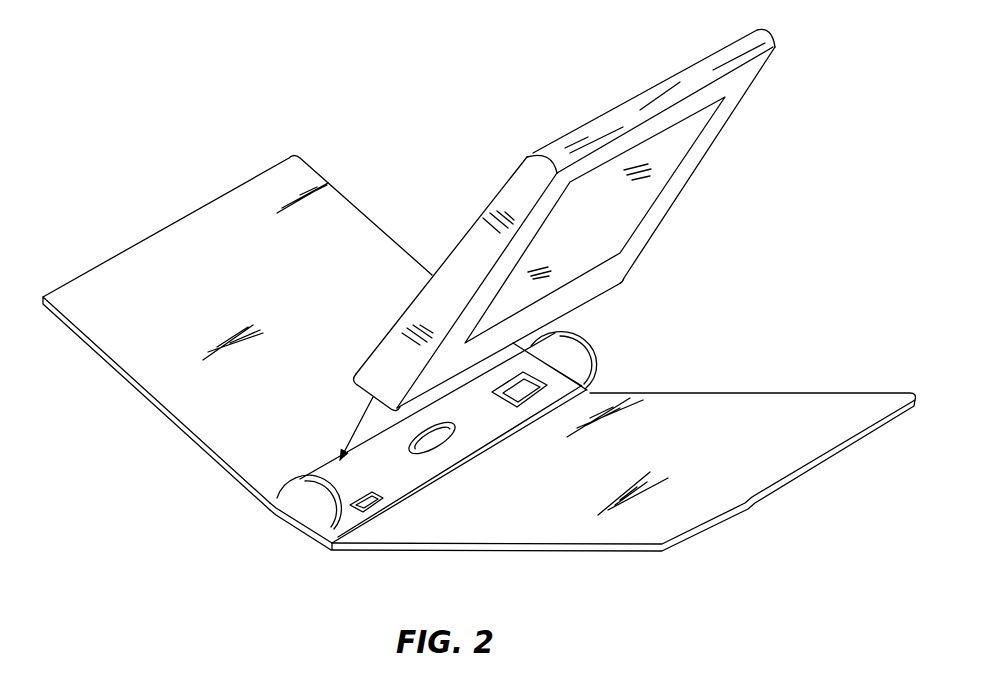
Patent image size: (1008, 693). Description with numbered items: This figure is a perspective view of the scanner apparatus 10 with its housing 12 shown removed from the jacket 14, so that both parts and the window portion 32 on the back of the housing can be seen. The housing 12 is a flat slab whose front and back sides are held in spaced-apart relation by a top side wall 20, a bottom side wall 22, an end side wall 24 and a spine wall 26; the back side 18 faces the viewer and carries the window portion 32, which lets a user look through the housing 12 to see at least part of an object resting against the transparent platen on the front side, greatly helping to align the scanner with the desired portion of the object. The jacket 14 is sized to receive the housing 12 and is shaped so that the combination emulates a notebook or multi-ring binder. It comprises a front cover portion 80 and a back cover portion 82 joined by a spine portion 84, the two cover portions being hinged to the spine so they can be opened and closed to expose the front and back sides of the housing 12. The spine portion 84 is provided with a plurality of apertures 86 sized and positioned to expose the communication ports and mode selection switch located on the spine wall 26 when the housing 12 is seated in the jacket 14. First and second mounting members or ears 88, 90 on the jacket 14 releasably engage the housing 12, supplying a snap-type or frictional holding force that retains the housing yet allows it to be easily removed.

The scanner apparatus 10 is at (176, 116).
The housing 12 is at (578, 120).
The jacket 14 is at (138, 232).
The back side 18 is at (747, 78).
The top side wall 20 is at (707, 152).
The bottom side wall 22 is at (403, 305).
The end side wall 24 is at (683, 70).
The spine wall 26 is at (358, 388).
The window portion 32 is at (641, 225).
The front cover portion 80 is at (97, 353).
The back cover portion 82 is at (565, 552).
The spine portion 84 is at (297, 530).
The apertures 86 is at (425, 455).
The first mounting member 88 is at (598, 343).
The second mounting member 90 is at (300, 477).